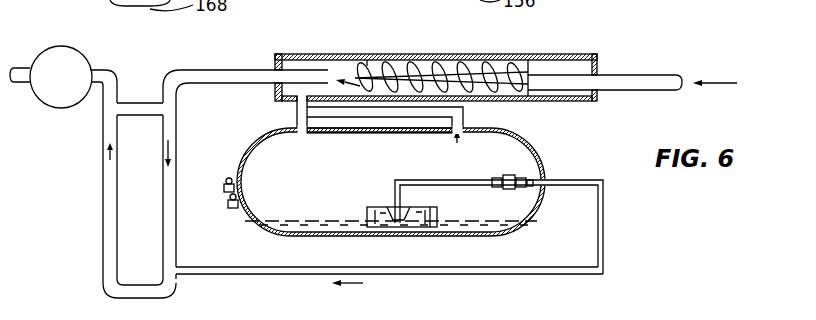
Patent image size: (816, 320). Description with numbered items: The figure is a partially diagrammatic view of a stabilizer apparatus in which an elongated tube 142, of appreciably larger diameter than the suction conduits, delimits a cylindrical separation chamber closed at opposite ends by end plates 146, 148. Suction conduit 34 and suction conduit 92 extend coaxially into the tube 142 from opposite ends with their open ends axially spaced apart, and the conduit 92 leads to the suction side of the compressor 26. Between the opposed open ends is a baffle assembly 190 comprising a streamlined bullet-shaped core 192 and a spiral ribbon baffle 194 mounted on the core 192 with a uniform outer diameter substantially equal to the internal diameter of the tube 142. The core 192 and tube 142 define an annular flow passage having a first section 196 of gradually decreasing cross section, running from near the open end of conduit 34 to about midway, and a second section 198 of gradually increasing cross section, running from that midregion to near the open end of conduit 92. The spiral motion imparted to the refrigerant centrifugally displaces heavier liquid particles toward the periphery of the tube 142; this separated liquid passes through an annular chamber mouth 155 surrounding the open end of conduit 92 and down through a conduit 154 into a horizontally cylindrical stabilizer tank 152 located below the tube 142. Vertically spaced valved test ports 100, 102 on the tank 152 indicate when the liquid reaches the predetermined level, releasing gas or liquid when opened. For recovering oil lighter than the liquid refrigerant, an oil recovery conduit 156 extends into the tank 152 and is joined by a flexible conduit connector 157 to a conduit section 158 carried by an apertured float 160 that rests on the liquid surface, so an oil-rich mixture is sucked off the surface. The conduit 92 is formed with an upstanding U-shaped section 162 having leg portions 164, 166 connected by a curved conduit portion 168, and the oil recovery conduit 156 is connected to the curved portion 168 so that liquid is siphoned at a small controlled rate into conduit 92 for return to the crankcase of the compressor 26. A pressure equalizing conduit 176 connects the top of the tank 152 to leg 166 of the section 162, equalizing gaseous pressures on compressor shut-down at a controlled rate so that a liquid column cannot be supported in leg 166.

The compressor 26 is at (86, 57).
The suction conduit 92 is at (213, 71).
The end plate 146 is at (276, 55).
The annular chamber mouth 155 is at (367, 58).
The second section of annular fluid flow passage 198 is at (393, 55).
The baffle assembly 190 is at (405, 44).
The bullet-shaped core 192 is at (425, 70).
The spiral ribbon baffle 194 is at (500, 63).
The elongated tube 142 is at (552, 57).
The end plate 148 is at (598, 61).
The suction conduit 34 is at (668, 78).
The first section of annular fluid flow passage 196 is at (490, 100).
The conduit 154 is at (295, 118).
The upper valved test port 100 is at (230, 182).
The leg portion 164 is at (172, 182).
The lower valved test port 102 is at (228, 205).
The leg portion 166 is at (108, 194).
The curved conduit portion 168 is at (135, 285).
The U-shaped section 162 is at (185, 235).
The pressure equalizing conduit 176 is at (345, 112).
The float 160 is at (358, 209).
The conduit section 158 is at (422, 180).
The flexible conduit connector 157 is at (513, 177).
The stabilizer tank 152 is at (553, 157).
The oil recovery conduit 156 is at (458, 274).